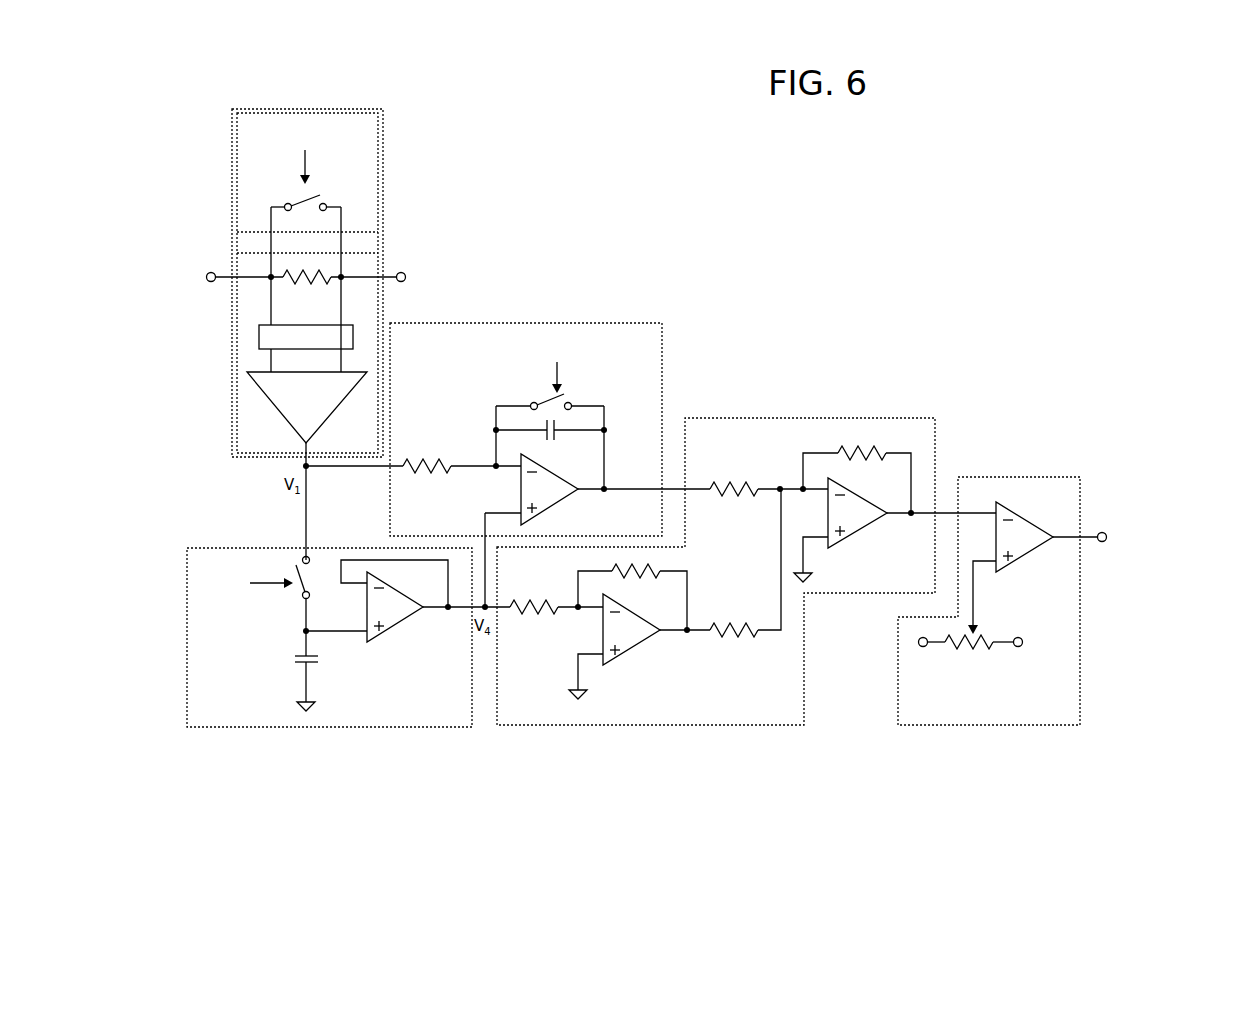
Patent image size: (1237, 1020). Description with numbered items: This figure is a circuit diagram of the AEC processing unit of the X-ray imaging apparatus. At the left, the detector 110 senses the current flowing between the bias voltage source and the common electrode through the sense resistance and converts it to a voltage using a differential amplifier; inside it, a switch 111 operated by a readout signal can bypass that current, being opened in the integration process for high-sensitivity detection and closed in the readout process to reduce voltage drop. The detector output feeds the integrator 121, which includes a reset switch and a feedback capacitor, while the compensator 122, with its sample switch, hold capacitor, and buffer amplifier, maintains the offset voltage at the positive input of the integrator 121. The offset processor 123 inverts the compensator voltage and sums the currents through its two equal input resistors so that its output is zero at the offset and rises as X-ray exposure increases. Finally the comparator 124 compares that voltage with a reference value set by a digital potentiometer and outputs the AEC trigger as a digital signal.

The detector 110 is at (383, 240).
The switch 111 is at (378, 172).
The integrator 121 is at (520, 323).
The compensator 122 is at (397, 727).
The offset processor 123 is at (705, 727).
The comparator 124 is at (1041, 477).